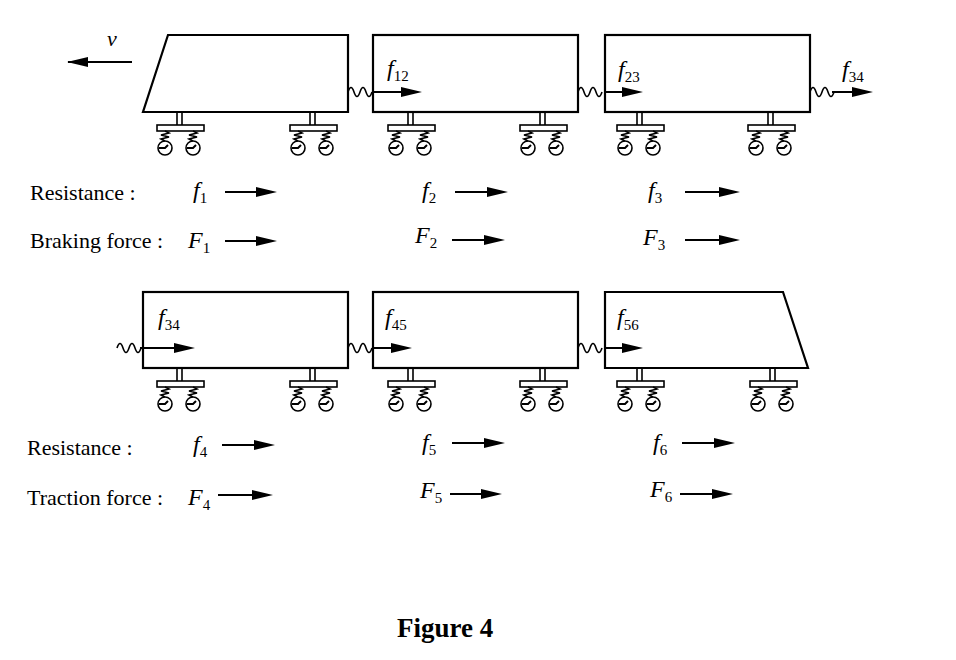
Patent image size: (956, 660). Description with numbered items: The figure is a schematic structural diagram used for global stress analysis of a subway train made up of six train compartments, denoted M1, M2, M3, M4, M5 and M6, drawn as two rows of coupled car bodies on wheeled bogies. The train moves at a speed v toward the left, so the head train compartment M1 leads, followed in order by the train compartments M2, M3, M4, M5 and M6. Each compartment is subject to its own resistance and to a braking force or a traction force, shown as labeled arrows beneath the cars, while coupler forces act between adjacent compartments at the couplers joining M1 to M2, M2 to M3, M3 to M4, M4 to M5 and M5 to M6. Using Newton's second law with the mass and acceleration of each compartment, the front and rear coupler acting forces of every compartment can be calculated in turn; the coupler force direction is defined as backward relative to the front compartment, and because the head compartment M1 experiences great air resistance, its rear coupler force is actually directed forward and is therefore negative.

The first train compartment M1 is at (245, 95).
The second train compartment M2 is at (475, 95).
The third train compartment M3 is at (707, 95).
The fourth train compartment M4 is at (245, 351).
The fifth train compartment M5 is at (475, 351).
The sixth train compartment M6 is at (706, 351).